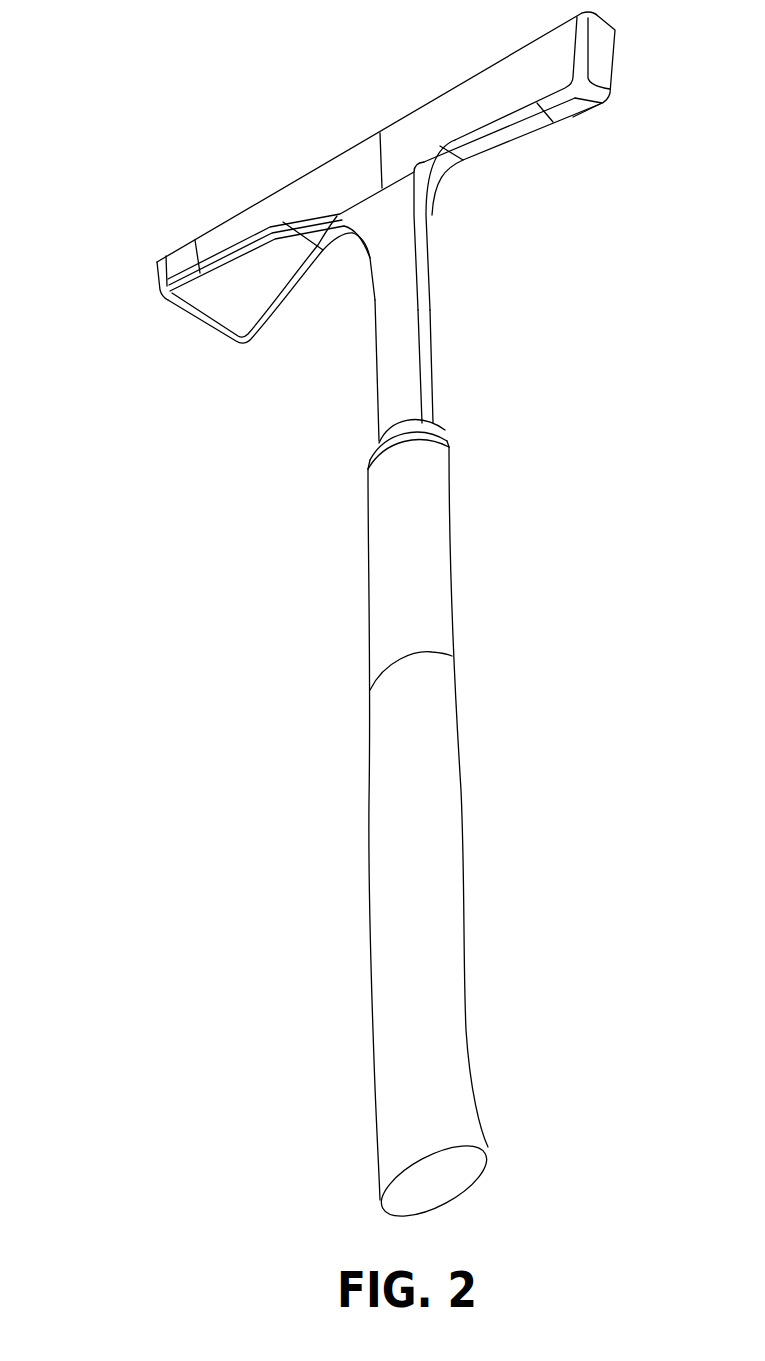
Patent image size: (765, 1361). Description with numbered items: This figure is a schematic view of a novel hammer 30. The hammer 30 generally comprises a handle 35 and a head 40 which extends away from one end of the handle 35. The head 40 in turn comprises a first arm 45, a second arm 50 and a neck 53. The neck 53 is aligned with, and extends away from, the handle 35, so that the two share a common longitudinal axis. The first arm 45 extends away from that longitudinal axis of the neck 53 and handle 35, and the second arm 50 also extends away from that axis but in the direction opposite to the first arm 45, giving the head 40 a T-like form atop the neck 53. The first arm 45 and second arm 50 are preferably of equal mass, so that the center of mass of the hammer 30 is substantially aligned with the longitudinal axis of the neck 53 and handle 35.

The hammer 30 is at (135, 95).
The head 40 is at (337, 108).
The first arm 45 is at (197, 357).
The second arm 50 is at (603, 137).
The neck 53 is at (437, 305).
The handle 35 is at (507, 792).